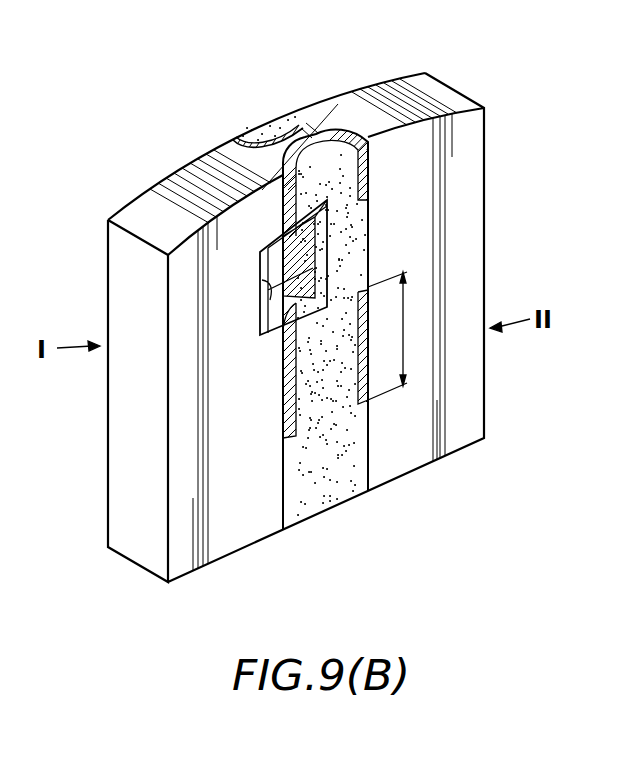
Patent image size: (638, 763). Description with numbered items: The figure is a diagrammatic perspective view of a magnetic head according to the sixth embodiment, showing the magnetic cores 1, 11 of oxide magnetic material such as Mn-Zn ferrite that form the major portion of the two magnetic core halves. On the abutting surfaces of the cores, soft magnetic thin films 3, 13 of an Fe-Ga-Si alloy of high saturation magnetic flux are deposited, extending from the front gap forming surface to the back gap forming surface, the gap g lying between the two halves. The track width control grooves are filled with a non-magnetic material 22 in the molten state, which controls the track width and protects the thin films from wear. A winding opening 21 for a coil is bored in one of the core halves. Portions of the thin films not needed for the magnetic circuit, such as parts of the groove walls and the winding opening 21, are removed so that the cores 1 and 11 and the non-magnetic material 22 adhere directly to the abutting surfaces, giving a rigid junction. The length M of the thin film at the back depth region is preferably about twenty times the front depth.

The magnetic core 1 is at (142, 212).
The magnetic core 11 is at (403, 87).
The soft-magnetic thin film 13 is at (300, 120).
The soft-magnetic thin film 3 is at (237, 137).
The non-magnetic material 22 is at (268, 120).
The gap g is at (307, 140).
The winding opening 21 is at (270, 284).
The length of the soft magnetic thin film at the back depth region M is at (398, 336).